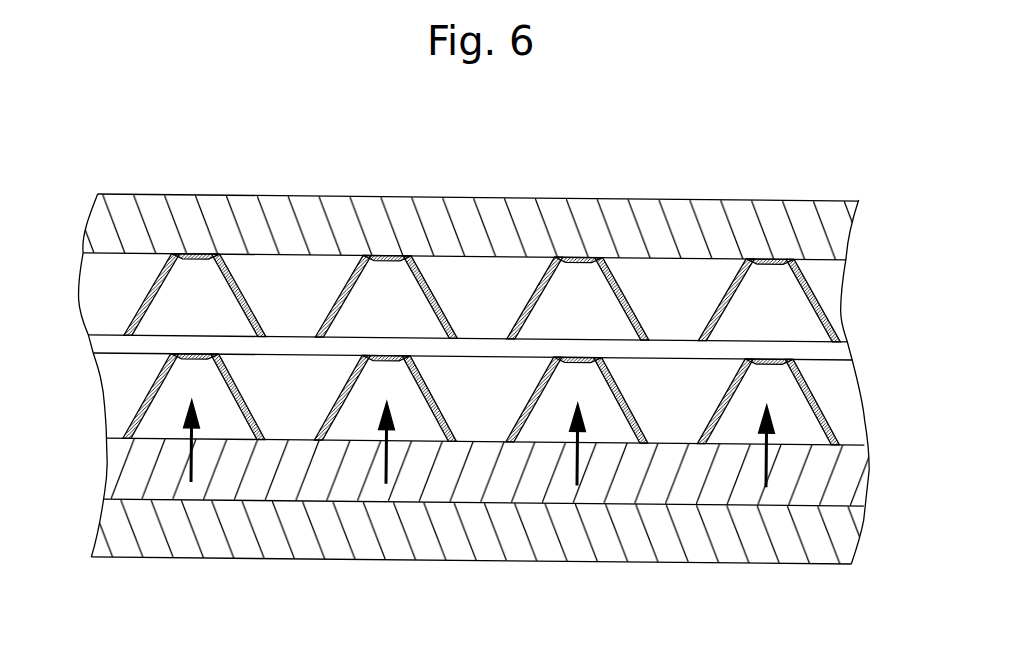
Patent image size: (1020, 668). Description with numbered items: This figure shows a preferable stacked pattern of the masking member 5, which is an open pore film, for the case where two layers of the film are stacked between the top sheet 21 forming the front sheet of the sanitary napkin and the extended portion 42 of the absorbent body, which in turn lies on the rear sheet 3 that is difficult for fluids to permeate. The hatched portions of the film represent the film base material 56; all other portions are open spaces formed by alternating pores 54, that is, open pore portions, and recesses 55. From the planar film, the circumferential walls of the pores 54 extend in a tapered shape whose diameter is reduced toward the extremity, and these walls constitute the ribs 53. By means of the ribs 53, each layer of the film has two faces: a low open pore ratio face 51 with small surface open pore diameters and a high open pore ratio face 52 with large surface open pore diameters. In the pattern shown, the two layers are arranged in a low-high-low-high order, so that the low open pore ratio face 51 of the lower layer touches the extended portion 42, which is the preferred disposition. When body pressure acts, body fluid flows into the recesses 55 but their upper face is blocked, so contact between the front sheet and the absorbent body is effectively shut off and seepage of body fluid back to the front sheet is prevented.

The top sheet 21 is at (828, 200).
The masking member 5 is at (833, 286).
The low open pore ratio face 51 is at (95, 334).
The high open pore ratio face 52 is at (102, 252).
The rib 53 is at (223, 280).
The pore 54 is at (323, 270).
The recess 55 is at (212, 427).
The film base material 56 is at (385, 250).
The extended portion 42 is at (858, 466).
The rear sheet 3 is at (850, 545).